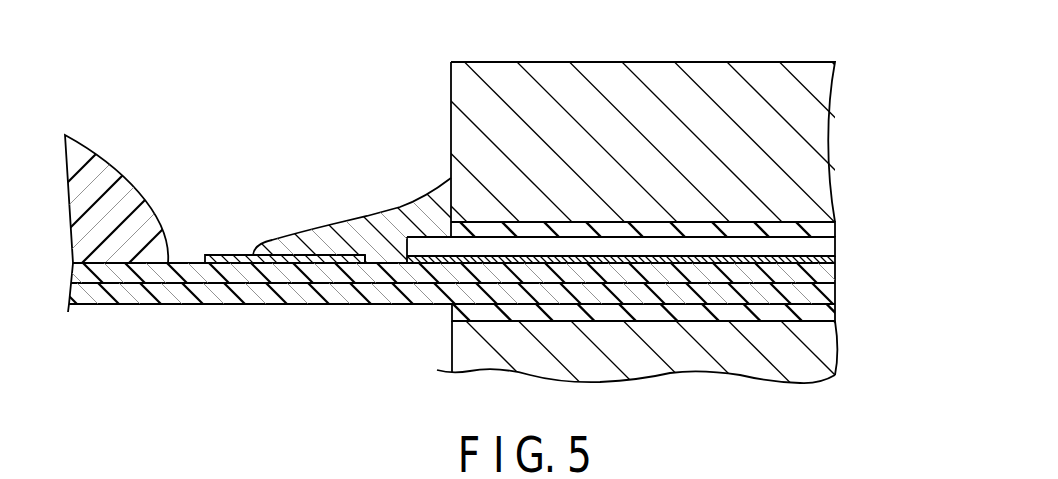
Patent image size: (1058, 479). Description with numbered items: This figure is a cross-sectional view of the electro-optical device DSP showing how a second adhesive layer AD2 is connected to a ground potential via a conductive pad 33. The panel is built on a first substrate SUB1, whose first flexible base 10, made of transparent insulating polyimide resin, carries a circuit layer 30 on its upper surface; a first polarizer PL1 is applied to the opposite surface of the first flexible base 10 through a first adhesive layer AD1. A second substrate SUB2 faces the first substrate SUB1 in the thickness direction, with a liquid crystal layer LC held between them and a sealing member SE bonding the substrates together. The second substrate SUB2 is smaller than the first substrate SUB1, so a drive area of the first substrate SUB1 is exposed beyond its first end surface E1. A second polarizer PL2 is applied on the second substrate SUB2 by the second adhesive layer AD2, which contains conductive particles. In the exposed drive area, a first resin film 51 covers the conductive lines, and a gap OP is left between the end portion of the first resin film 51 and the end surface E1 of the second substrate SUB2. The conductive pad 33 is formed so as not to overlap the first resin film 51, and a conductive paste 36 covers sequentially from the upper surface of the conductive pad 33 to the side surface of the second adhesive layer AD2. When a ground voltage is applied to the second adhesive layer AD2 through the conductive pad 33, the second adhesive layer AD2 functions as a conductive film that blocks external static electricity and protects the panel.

The first resin film 51 is at (101, 168).
The gap OP is at (237, 144).
The first end surface E1 is at (301, 161).
The conductive paste 36 is at (306, 242).
The conductive pad 33 is at (212, 252).
The sealing member SE is at (498, 262).
The electro-optical device DSP is at (516, 198).
The second polarizer PL2 is at (813, 138).
The second adhesive layer AD2 is at (838, 226).
The second substrate SUB2 is at (838, 245).
The liquid crystal layer LC is at (836, 260).
The first substrate SUB1 is at (489, 290).
The circuit layer 30 is at (822, 278).
The first flexible base 10 is at (866, 268).
The first adhesive layer AD1 is at (836, 316).
The first polarizer PL1 is at (823, 362).